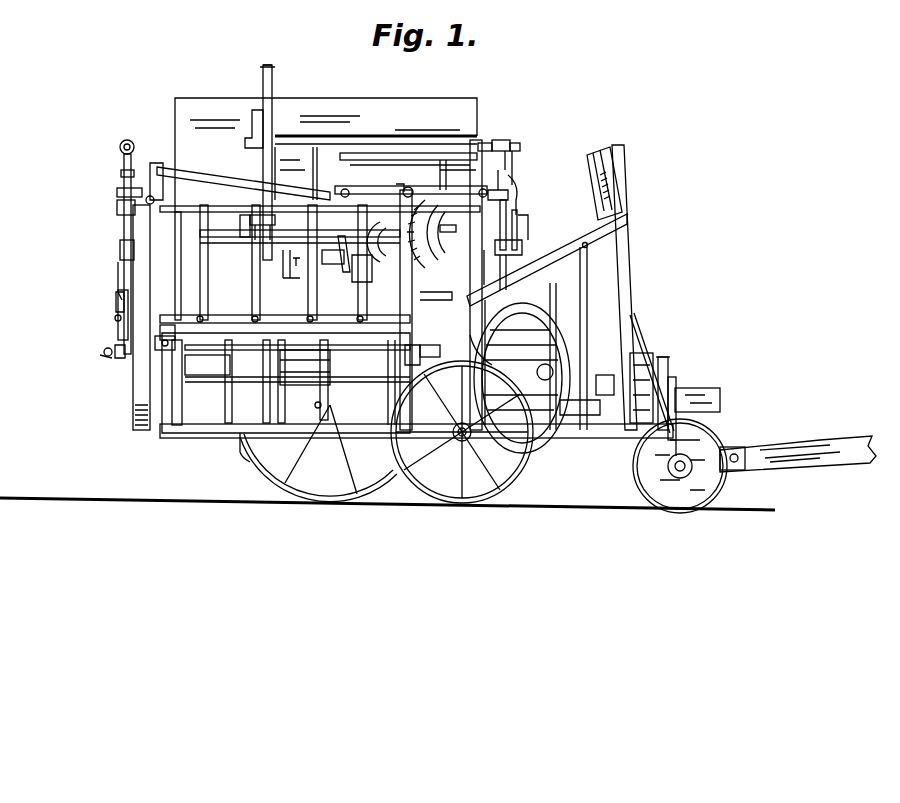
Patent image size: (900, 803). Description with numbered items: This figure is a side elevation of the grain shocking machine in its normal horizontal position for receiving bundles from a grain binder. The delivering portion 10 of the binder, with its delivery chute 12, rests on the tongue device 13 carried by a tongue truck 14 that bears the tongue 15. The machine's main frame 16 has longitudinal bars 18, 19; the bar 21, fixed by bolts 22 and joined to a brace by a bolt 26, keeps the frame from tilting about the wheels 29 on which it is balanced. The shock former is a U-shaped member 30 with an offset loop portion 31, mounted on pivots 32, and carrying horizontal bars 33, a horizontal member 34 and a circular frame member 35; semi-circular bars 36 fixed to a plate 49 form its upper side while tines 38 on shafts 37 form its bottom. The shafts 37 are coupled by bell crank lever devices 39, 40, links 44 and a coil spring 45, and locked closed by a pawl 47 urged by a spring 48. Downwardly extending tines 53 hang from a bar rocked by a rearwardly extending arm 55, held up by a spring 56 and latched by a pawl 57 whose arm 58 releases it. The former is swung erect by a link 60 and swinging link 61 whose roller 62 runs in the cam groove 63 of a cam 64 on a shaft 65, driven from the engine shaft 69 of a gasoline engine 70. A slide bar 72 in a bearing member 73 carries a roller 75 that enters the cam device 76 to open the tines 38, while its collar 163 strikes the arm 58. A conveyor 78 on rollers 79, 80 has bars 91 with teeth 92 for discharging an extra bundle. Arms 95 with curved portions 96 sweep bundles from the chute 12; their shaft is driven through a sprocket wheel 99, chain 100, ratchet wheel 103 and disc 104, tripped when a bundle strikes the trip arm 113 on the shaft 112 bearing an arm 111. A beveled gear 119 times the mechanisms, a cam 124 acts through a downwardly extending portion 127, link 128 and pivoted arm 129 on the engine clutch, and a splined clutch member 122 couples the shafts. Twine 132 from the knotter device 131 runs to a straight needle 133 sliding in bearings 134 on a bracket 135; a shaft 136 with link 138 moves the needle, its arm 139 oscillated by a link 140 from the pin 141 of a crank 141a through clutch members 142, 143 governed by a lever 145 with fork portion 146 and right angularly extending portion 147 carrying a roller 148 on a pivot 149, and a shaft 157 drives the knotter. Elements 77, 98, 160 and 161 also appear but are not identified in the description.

The delivering portion of grain binder 10 is at (326, 155).
The delivery chute 12 is at (196, 282).
The tongue device 13 is at (721, 398).
The tongue truck 14 is at (683, 462).
The tongue 15 is at (798, 453).
The main frame 16 is at (636, 270).
The longitudinally arranged bar 18 is at (383, 440).
The longitudinally arranged bar 19 is at (190, 434).
The bar 21 is at (678, 388).
The bolts 22 is at (668, 466).
The bolt 26 is at (672, 378).
The wheels 29 is at (518, 480).
The U-shaped member 30 is at (410, 362).
The loop portion 31 is at (440, 296).
The pivots 32 is at (345, 440).
The horizontally arranged bar 33 is at (220, 314).
The horizontally arranged member 34 is at (240, 212).
The circular frame member 35 is at (150, 283).
The semi-circular bars 36 is at (358, 298).
The shafts 37 is at (123, 345).
The tines 38 is at (278, 392).
The bell crank lever device 39 is at (115, 318).
The bell crank lever device 40 is at (104, 352).
The links 44 is at (117, 358).
The coil spring 45 is at (100, 360).
The pawl 47 is at (115, 300).
The spring 48 is at (120, 250).
The plate 49 is at (240, 236).
The tines 53 is at (412, 410).
The rearwardly extending arm 55 is at (222, 176).
The spring 56 is at (411, 185).
The pawl 57 is at (152, 170).
The arm 58 is at (116, 192).
The link 60 is at (487, 350).
The swinging link 61 is at (588, 308).
The roller 62 is at (560, 408).
The cam groove 63 is at (540, 310).
The cam 64 is at (522, 378).
The shaft 65 is at (542, 365).
The engine shaft 69 is at (606, 382).
The gasoline engine 70 is at (656, 352).
The slide bar 72 is at (124, 225).
The bearing member 73 is at (116, 208).
The roller 75 is at (135, 144).
The cam device 76 is at (604, 183).
The hook 77 is at (117, 280).
The conveyor 78 is at (207, 367).
The roller 79 is at (172, 352).
The roller 80 is at (420, 348).
The bars 91 is at (166, 325).
The teeth 92 is at (155, 345).
The arms 95 is at (256, 215).
The curved portions 96 is at (298, 214).
The box 98 is at (305, 367).
The sprocket wheel 99 is at (508, 212).
The chain 100 is at (507, 264).
The ratchet wheel 103 is at (489, 267).
The disc 104 is at (509, 194).
The arm 111 is at (536, 195).
The shaft 112 is at (451, 175).
The trip arm 113 is at (297, 264).
The beveled gear 119 is at (431, 242).
The splined clutch member 122 is at (447, 232).
The cam 124 is at (417, 247).
The downwardly extending portion 127 is at (352, 256).
The link 128 is at (436, 297).
The pivoted arm 129 is at (550, 298).
The knotter device 131 is at (366, 269).
The twine 132 is at (240, 450).
The needle 133 is at (274, 86).
The bearings 134 is at (280, 135).
The bracket 135 is at (276, 178).
The shaft 136 is at (426, 150).
The link 138 is at (262, 80).
The rotatively mounted arm 139 is at (514, 170).
The link 140 is at (518, 229).
The pin 141 is at (524, 247).
The crank 141a is at (557, 227).
The clutch member 142 is at (500, 140).
The clutch member 143 is at (518, 144).
The lever 145 is at (508, 160).
The fork portion 146 is at (486, 142).
The right angularly extending portion 147 is at (412, 186).
The roller 148 is at (401, 177).
The pivot 149 is at (520, 185).
The shaft 157 is at (252, 122).
The block 160 is at (456, 223).
The pivot 161 is at (348, 224).
The collar 163 is at (120, 173).